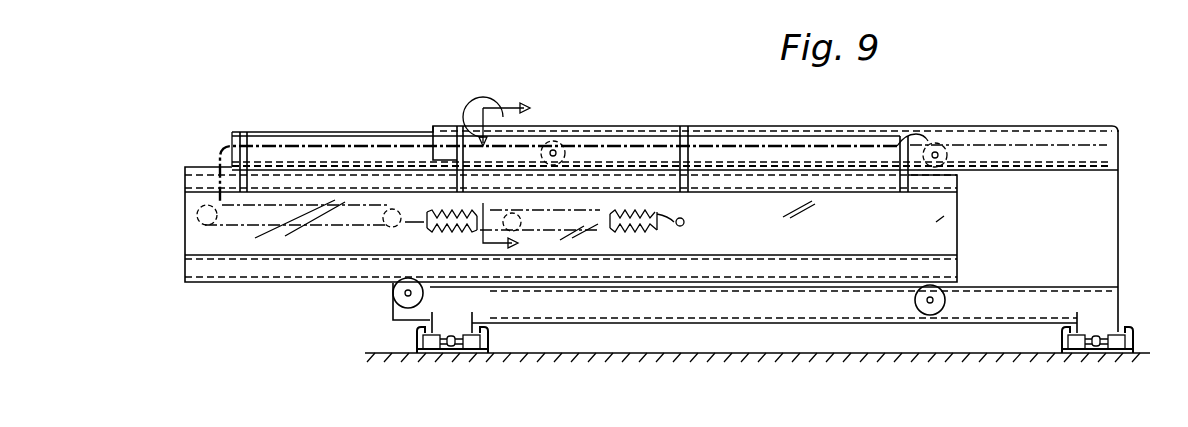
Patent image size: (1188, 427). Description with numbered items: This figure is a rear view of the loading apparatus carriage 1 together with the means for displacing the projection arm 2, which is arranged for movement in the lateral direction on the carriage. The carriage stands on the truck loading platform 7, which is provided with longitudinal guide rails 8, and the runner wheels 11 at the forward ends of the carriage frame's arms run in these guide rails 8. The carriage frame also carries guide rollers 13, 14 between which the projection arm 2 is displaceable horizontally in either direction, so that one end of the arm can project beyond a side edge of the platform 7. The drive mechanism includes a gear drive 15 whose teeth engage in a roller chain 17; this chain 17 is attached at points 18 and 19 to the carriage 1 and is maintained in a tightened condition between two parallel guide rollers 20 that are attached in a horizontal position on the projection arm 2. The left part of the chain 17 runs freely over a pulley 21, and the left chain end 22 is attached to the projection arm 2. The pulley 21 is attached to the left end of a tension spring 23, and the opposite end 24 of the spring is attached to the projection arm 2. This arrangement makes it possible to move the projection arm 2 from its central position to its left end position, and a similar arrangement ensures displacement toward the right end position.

The carriage 1 is at (613, 332).
The projection arm 2 is at (972, 239).
The truck loading surface or platform 7 is at (372, 358).
The guide rails 8 is at (490, 353).
The runner wheels 11 is at (461, 355).
The guide rollers 13 is at (566, 140).
The guide rollers 14 is at (399, 304).
The gear drive 15 is at (472, 116).
The roller chain 17 is at (218, 148).
The attachment point 18 is at (1107, 143).
The attachment point 19 is at (432, 136).
The parallel guide rollers 20 is at (756, 166).
The pulley 21 is at (388, 224).
The left chain end 22 is at (205, 228).
The tension spring 23 is at (634, 215).
The opposite end of the spring 24 is at (665, 223).